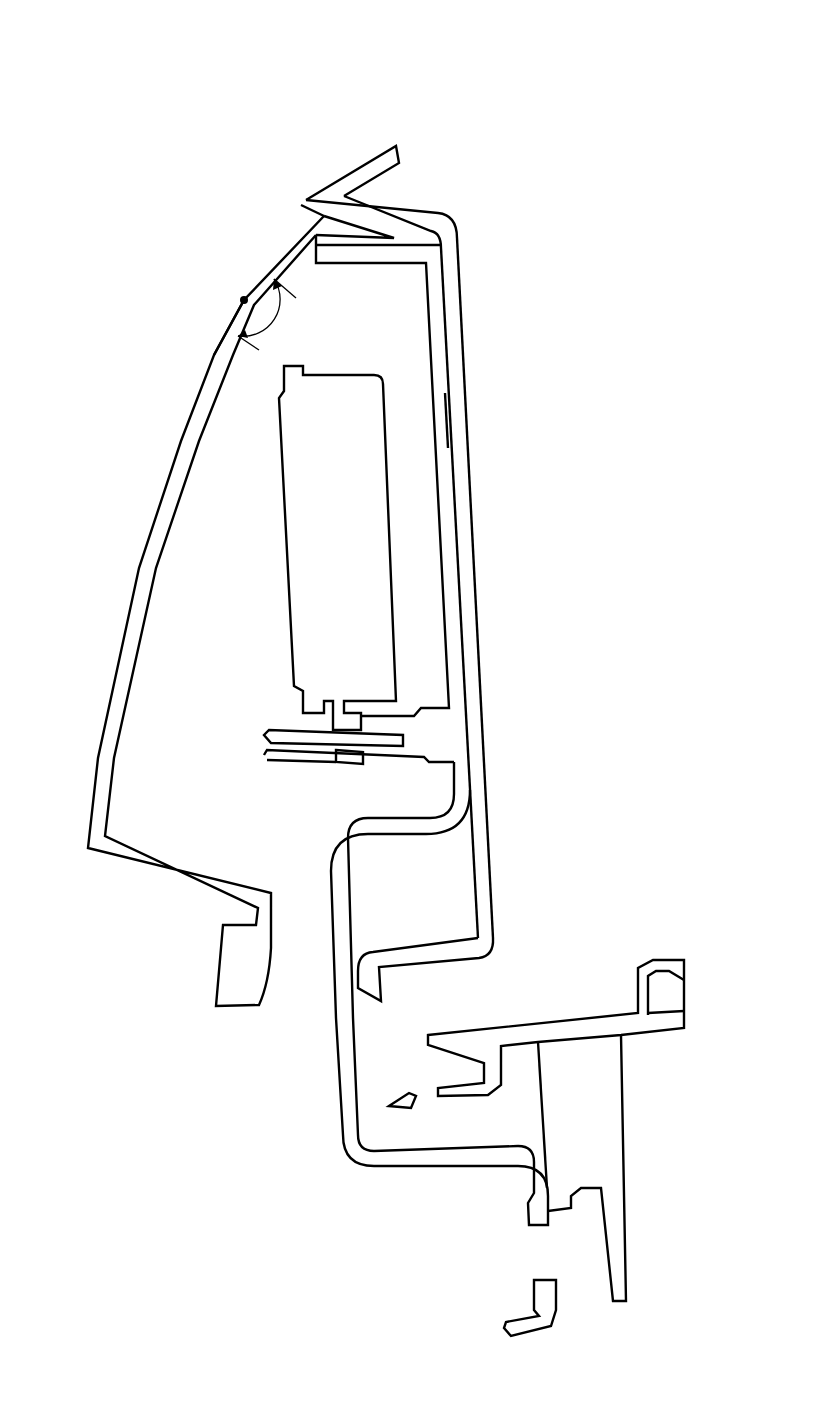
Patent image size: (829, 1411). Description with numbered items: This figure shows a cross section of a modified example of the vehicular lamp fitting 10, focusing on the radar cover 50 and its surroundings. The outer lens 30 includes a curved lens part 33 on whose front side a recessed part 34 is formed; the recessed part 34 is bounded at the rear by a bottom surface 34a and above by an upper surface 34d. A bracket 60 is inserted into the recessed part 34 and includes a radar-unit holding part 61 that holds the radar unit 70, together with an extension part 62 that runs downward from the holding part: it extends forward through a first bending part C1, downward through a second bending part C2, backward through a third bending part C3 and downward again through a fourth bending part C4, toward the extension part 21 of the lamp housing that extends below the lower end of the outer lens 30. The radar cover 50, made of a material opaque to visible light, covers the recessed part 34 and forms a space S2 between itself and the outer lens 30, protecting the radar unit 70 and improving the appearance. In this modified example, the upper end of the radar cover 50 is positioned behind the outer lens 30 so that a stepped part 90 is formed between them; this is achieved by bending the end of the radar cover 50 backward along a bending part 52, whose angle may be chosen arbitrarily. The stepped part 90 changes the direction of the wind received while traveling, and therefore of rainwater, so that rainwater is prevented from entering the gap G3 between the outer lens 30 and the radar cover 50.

The vehicular lamp fitting 10 is at (337, 82).
The extension part 21 is at (620, 1163).
The outer lens 30 is at (451, 598).
The curved lens part 33 is at (463, 350).
The recessed part 34 is at (509, 416).
The bottom surface 34a is at (447, 400).
The upper surface 34d is at (368, 210).
The radar cover 50 is at (160, 487).
The bending part 52 is at (238, 300).
The bracket 60 is at (447, 498).
The radar-unit holding part 61 is at (458, 562).
The extension part 62 is at (337, 1052).
The radar unit 70 is at (350, 377).
The stepped part 90 is at (292, 208).
The gap G3 is at (315, 215).
The space S2 is at (209, 606).
The first bending part C1 is at (460, 812).
The second bending part C2 is at (330, 853).
The third bending part C3 is at (347, 1153).
The fourth bending part C4 is at (543, 1160).